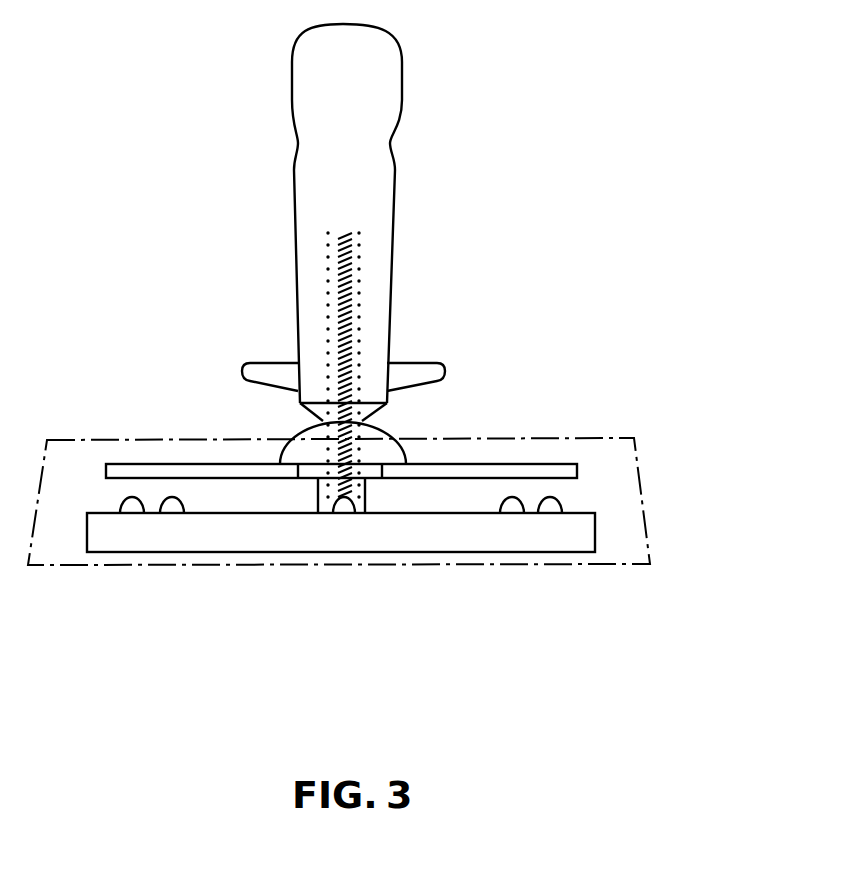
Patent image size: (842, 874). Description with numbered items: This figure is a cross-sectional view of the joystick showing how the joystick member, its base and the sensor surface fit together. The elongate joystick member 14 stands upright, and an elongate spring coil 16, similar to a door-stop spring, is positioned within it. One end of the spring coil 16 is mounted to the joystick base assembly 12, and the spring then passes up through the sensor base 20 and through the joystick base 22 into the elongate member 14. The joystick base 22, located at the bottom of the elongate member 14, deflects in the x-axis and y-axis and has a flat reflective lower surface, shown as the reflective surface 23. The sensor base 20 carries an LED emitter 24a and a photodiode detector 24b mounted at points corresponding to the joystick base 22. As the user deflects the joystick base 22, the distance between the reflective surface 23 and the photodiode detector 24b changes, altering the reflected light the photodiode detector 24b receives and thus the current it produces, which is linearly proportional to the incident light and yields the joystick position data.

The joystick base assembly 12 is at (596, 533).
The elongate joystick member 14 is at (401, 99).
The spring coil 16 is at (358, 259).
The sensor base 20 is at (215, 528).
The joystick base 22 is at (513, 462).
The reflective surface 23 is at (572, 481).
The LED emitter 24a is at (560, 500).
The photodiode detector 24b is at (512, 503).